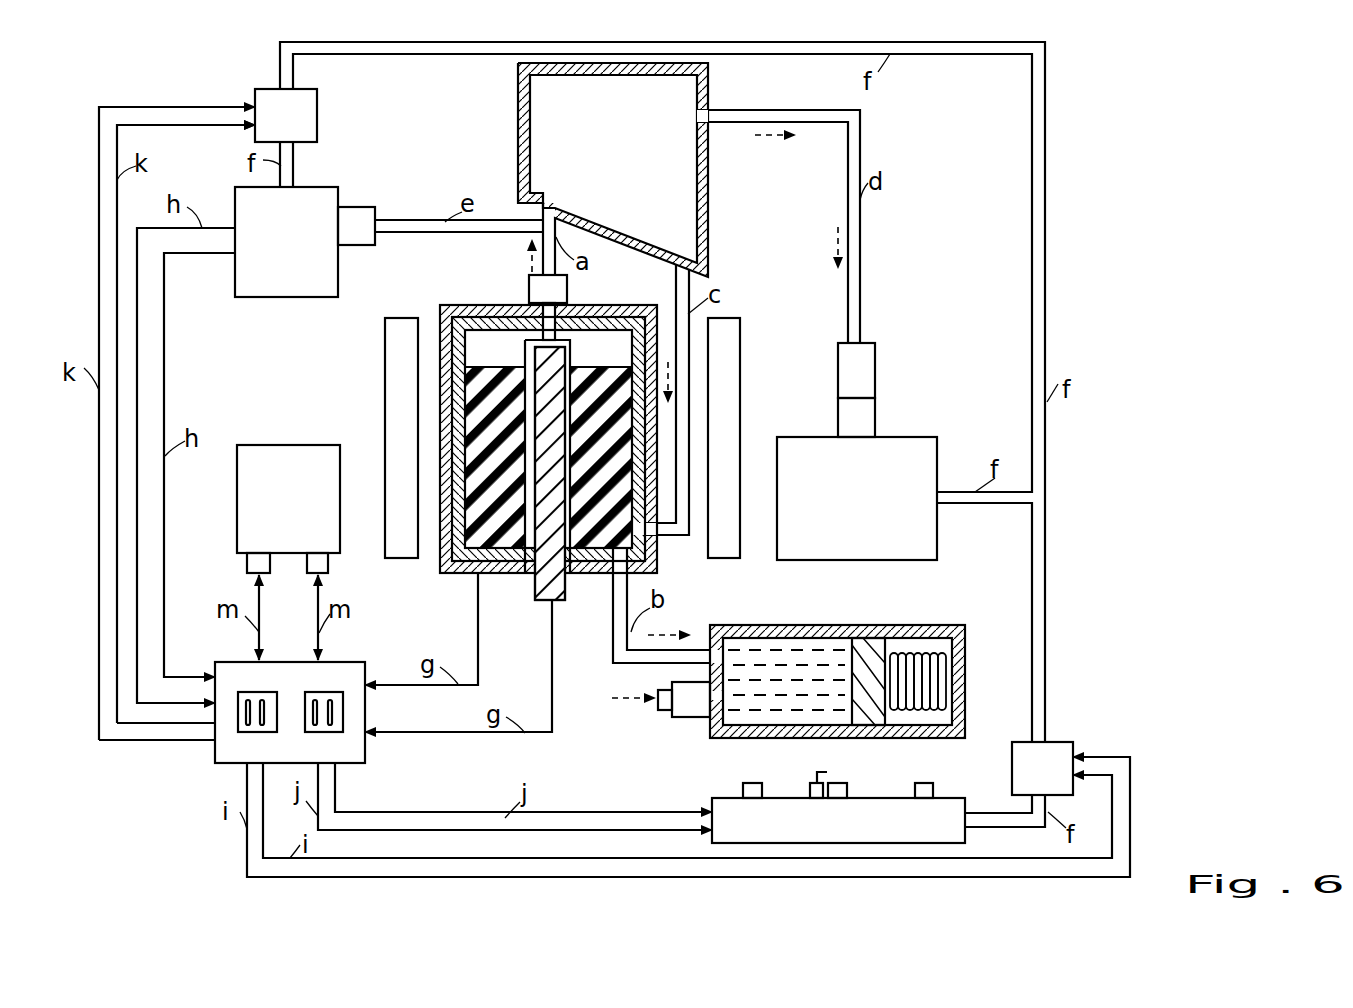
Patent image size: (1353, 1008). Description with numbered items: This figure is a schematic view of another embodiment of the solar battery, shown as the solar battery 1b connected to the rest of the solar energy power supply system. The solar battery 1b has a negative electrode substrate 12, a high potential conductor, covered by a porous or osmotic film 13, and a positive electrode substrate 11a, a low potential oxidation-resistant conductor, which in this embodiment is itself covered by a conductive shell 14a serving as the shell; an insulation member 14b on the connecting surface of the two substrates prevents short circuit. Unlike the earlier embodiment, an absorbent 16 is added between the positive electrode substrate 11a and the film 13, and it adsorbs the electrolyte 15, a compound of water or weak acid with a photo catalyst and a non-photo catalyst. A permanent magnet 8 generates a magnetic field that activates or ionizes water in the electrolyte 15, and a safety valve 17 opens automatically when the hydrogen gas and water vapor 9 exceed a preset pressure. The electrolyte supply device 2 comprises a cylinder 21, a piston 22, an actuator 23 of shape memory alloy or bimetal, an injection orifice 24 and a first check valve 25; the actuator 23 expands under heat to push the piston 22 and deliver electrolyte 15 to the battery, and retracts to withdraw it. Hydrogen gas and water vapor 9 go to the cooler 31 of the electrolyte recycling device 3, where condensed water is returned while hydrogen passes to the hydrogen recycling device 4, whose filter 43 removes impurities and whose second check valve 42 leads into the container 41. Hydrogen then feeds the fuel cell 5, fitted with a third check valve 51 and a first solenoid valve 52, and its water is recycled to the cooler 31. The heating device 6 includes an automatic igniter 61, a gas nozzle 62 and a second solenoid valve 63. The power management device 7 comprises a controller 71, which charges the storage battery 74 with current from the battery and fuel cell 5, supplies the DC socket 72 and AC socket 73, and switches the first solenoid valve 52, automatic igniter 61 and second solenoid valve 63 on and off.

The solar battery 1b is at (522, 394).
The electrolyte supply device 2 is at (850, 652).
The electrolyte recycling device 3 is at (720, 224).
The hydrogen recycling device 4 is at (849, 450).
The fuel cell 5 is at (320, 183).
The heating device 6 is at (816, 794).
The power management device 7 is at (281, 704).
The permanent magnet 8 is at (390, 362).
The hydrogen gas and water vapor 9 is at (560, 151).
The positive electrode substrate 11a is at (602, 576).
The negative electrode substrate 12 is at (543, 597).
The film 13 is at (560, 340).
The conductive shell 14a is at (622, 318).
The insulation member 14b is at (530, 574).
The electrolyte 15 is at (810, 650).
The absorbent 16 is at (440, 566).
The safety valve 17 is at (530, 292).
The cylinder 21 is at (730, 626).
The piston 22 is at (870, 642).
The actuator 23 is at (935, 650).
The injection orifice 24 is at (658, 698).
The first check valve 25 is at (675, 717).
The cooler 31 is at (518, 97).
The container 41 is at (810, 448).
The second check valve 42 is at (840, 421).
The filter 43 is at (868, 386).
The third check valve 51 is at (352, 214).
The first solenoid valve 52 is at (306, 112).
The automatic igniter 61 is at (813, 784).
The gas nozzle 62 is at (748, 784).
The second solenoid valve 63 is at (1058, 743).
The controller 71 is at (340, 754).
The DC socket 72 is at (250, 728).
The AC socket 73 is at (335, 694).
The storage battery 74 is at (295, 448).